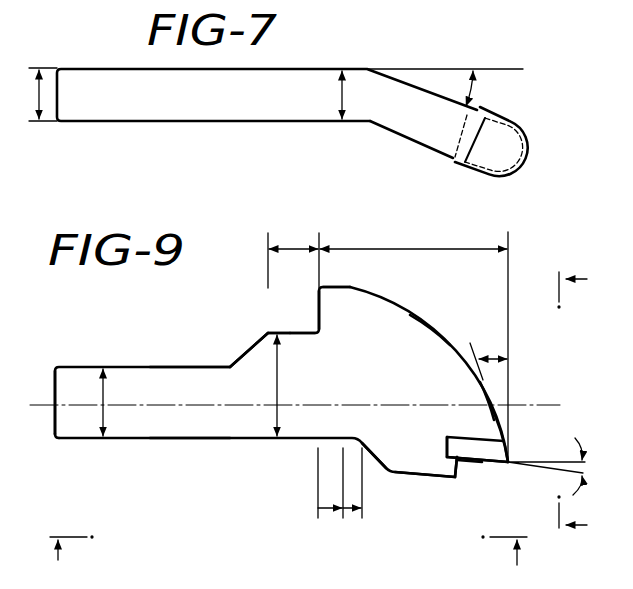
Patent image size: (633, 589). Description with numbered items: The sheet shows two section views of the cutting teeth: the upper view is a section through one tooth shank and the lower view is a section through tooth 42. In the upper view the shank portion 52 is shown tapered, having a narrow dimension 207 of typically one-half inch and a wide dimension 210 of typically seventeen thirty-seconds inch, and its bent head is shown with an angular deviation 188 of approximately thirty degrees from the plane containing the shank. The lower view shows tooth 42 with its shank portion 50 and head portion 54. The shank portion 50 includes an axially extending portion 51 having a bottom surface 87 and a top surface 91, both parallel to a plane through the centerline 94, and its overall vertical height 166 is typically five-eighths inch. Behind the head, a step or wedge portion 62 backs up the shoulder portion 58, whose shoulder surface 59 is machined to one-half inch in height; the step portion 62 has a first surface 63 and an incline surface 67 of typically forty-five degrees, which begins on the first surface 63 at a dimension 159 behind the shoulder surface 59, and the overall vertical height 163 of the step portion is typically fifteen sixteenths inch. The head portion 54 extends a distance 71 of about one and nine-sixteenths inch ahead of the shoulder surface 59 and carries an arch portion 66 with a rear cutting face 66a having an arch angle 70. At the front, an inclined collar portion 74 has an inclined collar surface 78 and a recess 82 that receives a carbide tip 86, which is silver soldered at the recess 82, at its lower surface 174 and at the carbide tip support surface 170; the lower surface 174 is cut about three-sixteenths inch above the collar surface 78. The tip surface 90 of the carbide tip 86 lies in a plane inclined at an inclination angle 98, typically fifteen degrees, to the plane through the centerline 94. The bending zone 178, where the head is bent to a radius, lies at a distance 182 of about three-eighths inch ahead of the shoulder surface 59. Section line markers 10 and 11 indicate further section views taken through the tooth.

In FIG. 7, the shank portion 52 is at (218, 124).
In FIG. 7, the narrow dimension 207 is at (313, 88).
In FIG. 7, the wide dimension 210 is at (40, 95).
In FIG. 7, the angular deviation 188 is at (475, 87).
In FIG. 9, the shank portion 50 is at (137, 363).
In FIG. 9, the axially extending portion 51 is at (203, 415).
In FIG. 9, the tooth 42 is at (420, 312).
In FIG. 9, the head portion 54 is at (425, 353).
In FIG. 9, the shoulder portion 58 is at (348, 310).
In FIG. 9, the shoulder surface 59 is at (318, 298).
In FIG. 9, the step or wedge portion 62 is at (307, 350).
In FIG. 9, the first surface 63 is at (280, 330).
In FIG. 9, the incline surface 67 is at (243, 355).
In FIG. 9, the top surface 91 is at (182, 365).
In FIG. 9, the centerline 94 is at (46, 409).
In FIG. 9, the bottom surface 87 is at (188, 442).
In FIG. 9, the overall vertical height 163 is at (276, 388).
In FIG. 9, the overall vertical height 166 is at (105, 410).
In FIG. 9, the dimension 159 is at (296, 246).
In FIG. 9, the distance 71 is at (422, 249).
In FIG. 9, the arch angle 70 is at (500, 357).
In FIG. 9, the arch portion 66 is at (483, 424).
In FIG. 9, the rear cutting face 66a is at (490, 395).
In FIG. 9, the carbide tip support surface 170 is at (500, 440).
In FIG. 9, the recess 82 is at (453, 418).
In FIG. 9, the carbide tip 86 is at (485, 452).
In FIG. 9, the tip surface 90 is at (482, 463).
In FIG. 9, the lower surface of recess 174 is at (466, 450).
In FIG. 9, the front inclined collar portion 74 is at (403, 457).
In FIG. 9, the inclined collar surface 78 is at (415, 477).
In FIG. 9, the distance 182 is at (327, 518).
In FIG. 9, the bending zone 178 is at (352, 513).
In FIG. 9, the inclination angle 98 is at (585, 467).
In FIG. 9, the section line 10- 10 is at (287, 561).
In FIG. 9, the section line 11- 11 is at (588, 403).